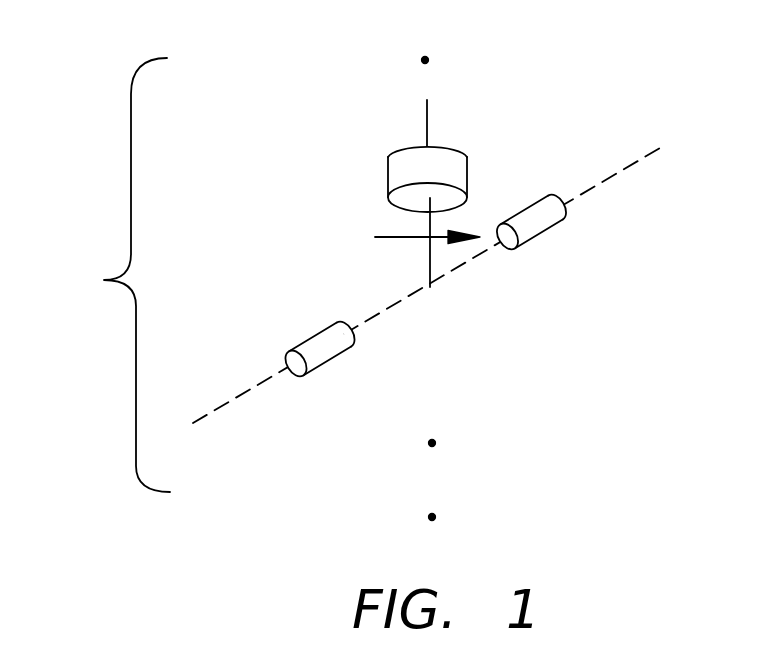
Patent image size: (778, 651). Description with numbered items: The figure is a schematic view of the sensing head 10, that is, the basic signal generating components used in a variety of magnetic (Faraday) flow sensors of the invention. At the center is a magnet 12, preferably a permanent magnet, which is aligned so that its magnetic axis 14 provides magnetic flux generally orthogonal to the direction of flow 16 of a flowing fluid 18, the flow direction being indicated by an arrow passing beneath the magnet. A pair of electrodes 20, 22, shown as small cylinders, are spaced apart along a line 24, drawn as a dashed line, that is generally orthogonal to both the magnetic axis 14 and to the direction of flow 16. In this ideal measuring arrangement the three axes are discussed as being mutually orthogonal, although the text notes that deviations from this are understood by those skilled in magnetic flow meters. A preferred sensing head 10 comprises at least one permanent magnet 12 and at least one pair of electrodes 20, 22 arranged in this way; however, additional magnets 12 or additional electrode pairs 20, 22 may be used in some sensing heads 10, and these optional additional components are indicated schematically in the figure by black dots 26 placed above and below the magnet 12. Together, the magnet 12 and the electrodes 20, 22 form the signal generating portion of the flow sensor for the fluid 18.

The sensing head 10 is at (104, 280).
The magnet 12 is at (388, 168).
The magnetic axis 14 is at (427, 123).
The direction of flow 16 is at (440, 240).
The flowing fluid 18 is at (585, 360).
The electrode 20 is at (553, 228).
The electrode 22 is at (320, 336).
The line 24 is at (393, 305).
The black dots 26 is at (425, 60).